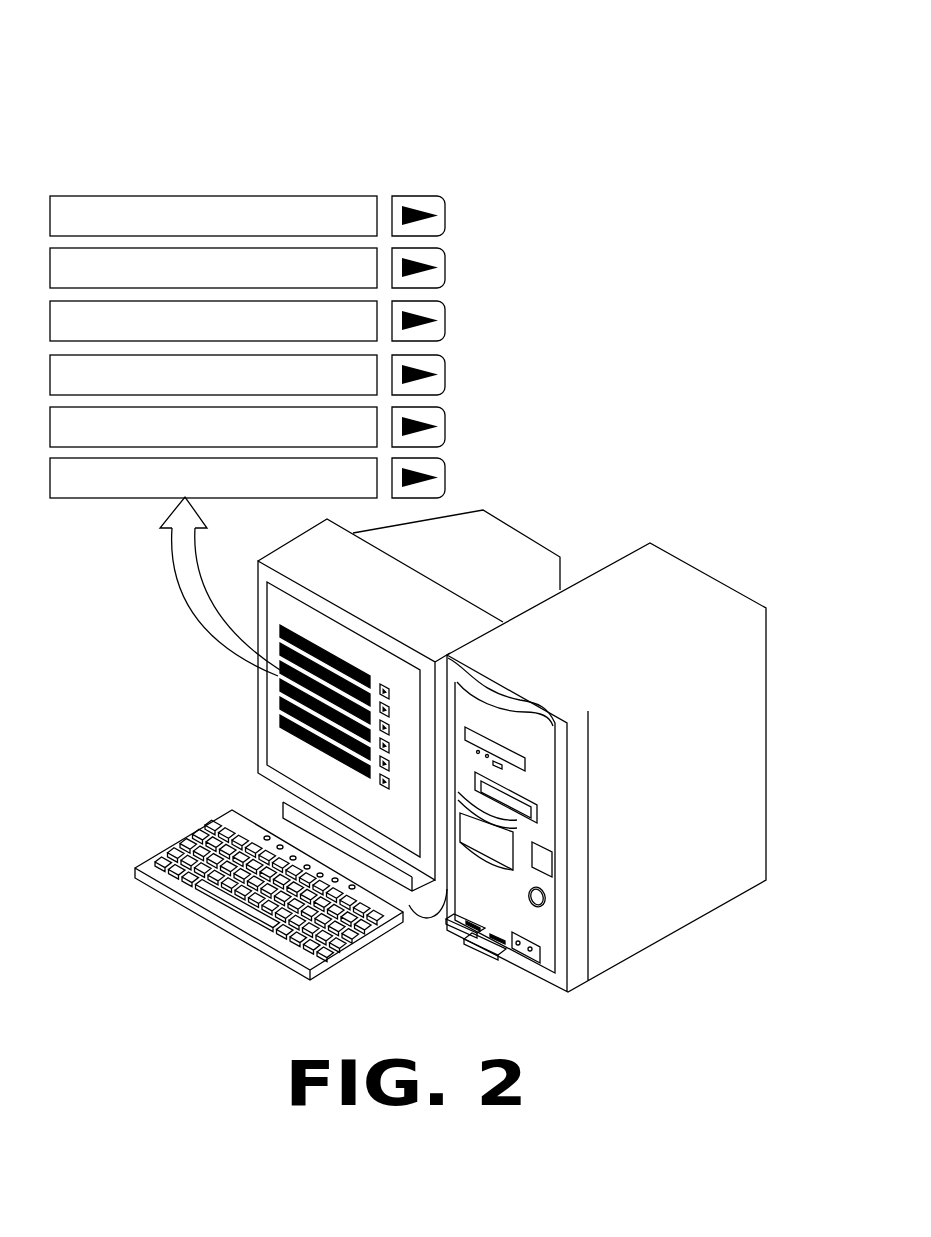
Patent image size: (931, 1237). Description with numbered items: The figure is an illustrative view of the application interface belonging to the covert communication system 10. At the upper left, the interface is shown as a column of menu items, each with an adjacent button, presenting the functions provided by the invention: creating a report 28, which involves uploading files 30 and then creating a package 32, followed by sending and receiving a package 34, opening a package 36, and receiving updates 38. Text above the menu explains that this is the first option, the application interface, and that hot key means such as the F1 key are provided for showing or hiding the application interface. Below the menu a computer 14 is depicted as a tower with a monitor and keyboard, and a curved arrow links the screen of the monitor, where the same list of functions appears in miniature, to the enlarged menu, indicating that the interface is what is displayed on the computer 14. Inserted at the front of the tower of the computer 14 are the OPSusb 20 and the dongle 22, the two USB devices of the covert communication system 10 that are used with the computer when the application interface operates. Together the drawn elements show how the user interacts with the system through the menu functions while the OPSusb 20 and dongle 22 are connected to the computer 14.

The covert communication system 10 is at (703, 163).
The computer 14 is at (682, 575).
The OPSusb 20 is at (472, 948).
The dongle 22 is at (450, 930).
The create report 28 is at (372, 228).
The upload files 30 is at (372, 280).
The create package 32 is at (372, 332).
The send/receive package 34 is at (372, 386).
The open package 36 is at (372, 438).
The updates 38 is at (372, 490).